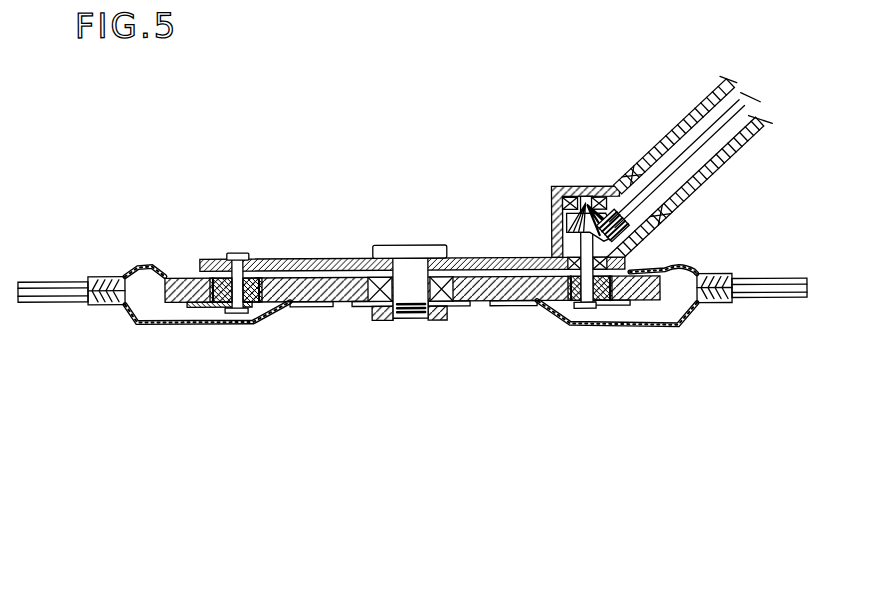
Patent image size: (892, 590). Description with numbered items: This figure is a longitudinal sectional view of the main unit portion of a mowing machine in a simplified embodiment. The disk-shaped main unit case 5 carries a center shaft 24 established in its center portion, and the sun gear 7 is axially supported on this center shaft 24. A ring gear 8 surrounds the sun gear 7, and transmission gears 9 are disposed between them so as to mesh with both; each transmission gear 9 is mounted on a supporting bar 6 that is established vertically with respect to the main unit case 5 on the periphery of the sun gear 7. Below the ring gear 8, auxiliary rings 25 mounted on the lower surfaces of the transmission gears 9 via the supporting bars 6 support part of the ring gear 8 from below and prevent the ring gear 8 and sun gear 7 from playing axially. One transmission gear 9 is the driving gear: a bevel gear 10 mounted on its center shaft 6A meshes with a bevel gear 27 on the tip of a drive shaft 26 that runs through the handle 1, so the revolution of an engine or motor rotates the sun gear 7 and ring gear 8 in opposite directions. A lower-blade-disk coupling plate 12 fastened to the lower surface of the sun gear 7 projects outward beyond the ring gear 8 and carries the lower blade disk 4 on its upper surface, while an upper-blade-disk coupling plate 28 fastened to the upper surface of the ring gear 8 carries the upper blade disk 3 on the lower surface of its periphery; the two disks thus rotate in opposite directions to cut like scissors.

The handle 1 is at (658, 145).
The upper blade disk 3 is at (55, 283).
The lower blade disk 4 is at (68, 296).
The main unit case 5 is at (308, 259).
The supporting bar 6 is at (232, 259).
The center shaft of the driving transmission gear 6A is at (565, 318).
The sun gear 7 is at (511, 290).
The ring gear 8 is at (170, 293).
The transmission gear 9 is at (223, 305).
The bevel gear 10 is at (557, 222).
The lower-blade-disk coupling plate 12 is at (263, 323).
The center shaft 24 is at (408, 276).
The auxiliary ring 25 is at (194, 305).
The drive shaft 26 is at (732, 115).
The bevel gear 27 is at (633, 241).
The upper-blade-disk coupling plate 28 is at (140, 267).